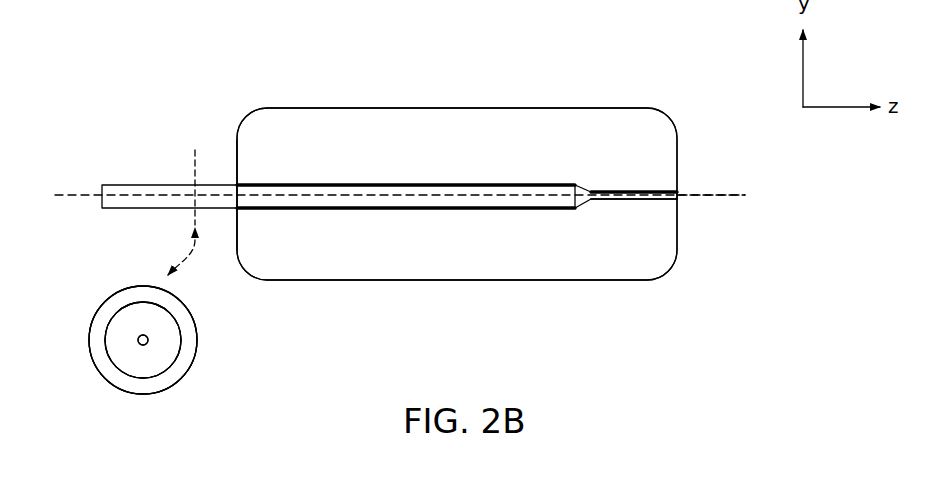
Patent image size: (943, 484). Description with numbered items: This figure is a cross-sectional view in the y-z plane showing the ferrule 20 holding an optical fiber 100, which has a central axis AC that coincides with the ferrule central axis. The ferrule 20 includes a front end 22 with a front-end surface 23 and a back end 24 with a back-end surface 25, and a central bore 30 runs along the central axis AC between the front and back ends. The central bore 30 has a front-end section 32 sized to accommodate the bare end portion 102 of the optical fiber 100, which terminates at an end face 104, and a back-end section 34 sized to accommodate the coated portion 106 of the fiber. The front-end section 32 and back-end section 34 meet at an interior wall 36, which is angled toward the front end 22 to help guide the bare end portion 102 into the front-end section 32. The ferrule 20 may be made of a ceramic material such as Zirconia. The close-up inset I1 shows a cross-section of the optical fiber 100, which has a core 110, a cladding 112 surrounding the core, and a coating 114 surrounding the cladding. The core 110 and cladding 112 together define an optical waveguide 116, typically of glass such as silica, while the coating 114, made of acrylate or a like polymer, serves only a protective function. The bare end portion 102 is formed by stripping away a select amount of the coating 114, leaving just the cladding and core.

The ferrule 20 is at (183, 62).
The front end 22 is at (698, 245).
The front-end surface 23 is at (677, 143).
The back end 24 is at (198, 148).
The back-end surface 25 is at (237, 143).
The central bore 30 is at (420, 182).
The front-end section 32 is at (638, 191).
The back-end section 34 is at (280, 184).
The interior wall 36 is at (578, 185).
The optical fiber 100 is at (140, 284).
The bare end portion 102 is at (612, 200).
The end face 104 is at (680, 199).
The coated portion 106 is at (278, 209).
The core 110 is at (140, 336).
The cladding 112 is at (150, 365).
The coating 114 is at (190, 340).
The optical waveguide 116 is at (145, 379).
The close-up inset I1 is at (88, 381).
The central axis AC is at (733, 195).